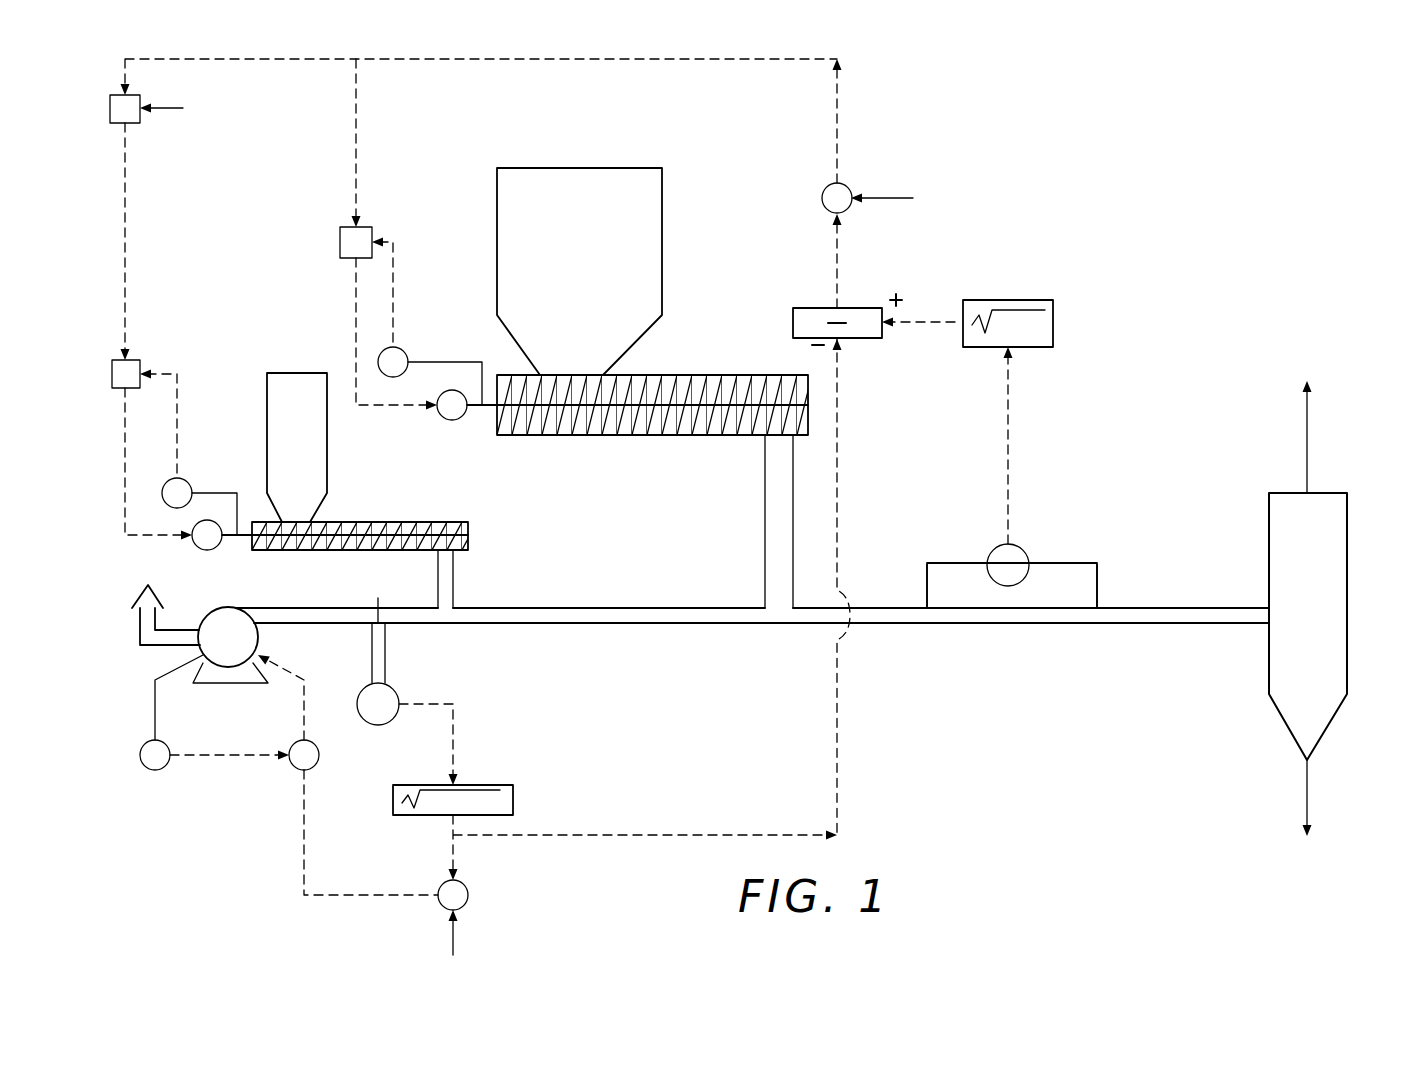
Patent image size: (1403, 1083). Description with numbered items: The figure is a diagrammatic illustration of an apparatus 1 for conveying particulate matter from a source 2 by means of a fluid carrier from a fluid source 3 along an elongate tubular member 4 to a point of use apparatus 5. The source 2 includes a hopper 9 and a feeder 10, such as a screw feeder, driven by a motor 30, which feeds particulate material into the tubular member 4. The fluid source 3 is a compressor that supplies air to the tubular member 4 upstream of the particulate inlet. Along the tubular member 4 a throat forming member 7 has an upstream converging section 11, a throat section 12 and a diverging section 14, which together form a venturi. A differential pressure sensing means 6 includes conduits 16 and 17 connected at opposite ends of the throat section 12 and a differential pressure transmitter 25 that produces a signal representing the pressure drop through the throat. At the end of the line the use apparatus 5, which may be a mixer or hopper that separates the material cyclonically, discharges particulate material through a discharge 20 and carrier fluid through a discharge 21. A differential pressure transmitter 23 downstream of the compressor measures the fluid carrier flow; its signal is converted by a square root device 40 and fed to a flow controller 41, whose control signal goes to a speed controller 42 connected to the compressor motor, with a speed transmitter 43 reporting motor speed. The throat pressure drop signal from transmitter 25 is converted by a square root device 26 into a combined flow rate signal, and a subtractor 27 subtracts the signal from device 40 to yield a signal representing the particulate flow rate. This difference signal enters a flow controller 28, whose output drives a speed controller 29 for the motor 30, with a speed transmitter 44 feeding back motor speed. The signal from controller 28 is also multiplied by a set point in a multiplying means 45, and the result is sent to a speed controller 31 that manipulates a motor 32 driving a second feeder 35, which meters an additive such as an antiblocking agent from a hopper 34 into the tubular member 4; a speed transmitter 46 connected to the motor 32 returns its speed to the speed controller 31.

The apparatus for conveying particulate matter 1 is at (1108, 200).
The source of particulate material 2 is at (676, 134).
The fluid source 3 is at (258, 637).
The elongate tubular member 4 is at (800, 606).
The point of use apparatus 5 is at (1347, 525).
The differential pressure sensing means 6 is at (1022, 550).
The throat forming member 7 is at (1028, 716).
The hopper 9 is at (662, 237).
The feeder 10 is at (625, 435).
The upstream converging section 11 is at (915, 624).
The throat section 12 is at (990, 624).
The diverging section 14 is at (1043, 624).
The conduit 16 is at (927, 580).
The conduit 17 is at (1097, 580).
The discharge 20 is at (1307, 780).
The discharge 21 is at (1307, 430).
The differential pressure transmitter 23 is at (390, 684).
The differential pressure transmitter 25 is at (990, 550).
The square root device 26 is at (1053, 320).
The subtractor means 27 is at (798, 308).
The flow controller 28 is at (845, 186).
The speed controller 29 is at (372, 235).
The motor 30 is at (452, 418).
The speed controller 31 is at (140, 365).
The motor 32 is at (212, 550).
The hopper 34 is at (300, 373).
The feeder 35 is at (380, 522).
The square root device 40 is at (513, 800).
The flow controller 41 is at (468, 895).
The speed controller 42 is at (320, 755).
The speed transmitter 43 is at (140, 755).
The speed transmitter 44 is at (403, 350).
The multiplying means 45 is at (140, 100).
The speed transmitter 46 is at (187, 480).